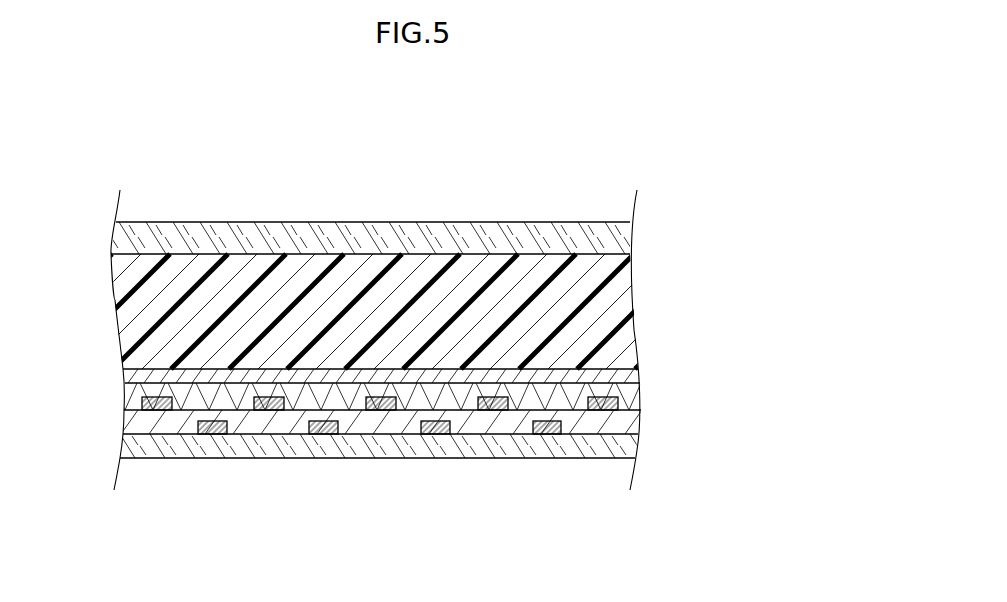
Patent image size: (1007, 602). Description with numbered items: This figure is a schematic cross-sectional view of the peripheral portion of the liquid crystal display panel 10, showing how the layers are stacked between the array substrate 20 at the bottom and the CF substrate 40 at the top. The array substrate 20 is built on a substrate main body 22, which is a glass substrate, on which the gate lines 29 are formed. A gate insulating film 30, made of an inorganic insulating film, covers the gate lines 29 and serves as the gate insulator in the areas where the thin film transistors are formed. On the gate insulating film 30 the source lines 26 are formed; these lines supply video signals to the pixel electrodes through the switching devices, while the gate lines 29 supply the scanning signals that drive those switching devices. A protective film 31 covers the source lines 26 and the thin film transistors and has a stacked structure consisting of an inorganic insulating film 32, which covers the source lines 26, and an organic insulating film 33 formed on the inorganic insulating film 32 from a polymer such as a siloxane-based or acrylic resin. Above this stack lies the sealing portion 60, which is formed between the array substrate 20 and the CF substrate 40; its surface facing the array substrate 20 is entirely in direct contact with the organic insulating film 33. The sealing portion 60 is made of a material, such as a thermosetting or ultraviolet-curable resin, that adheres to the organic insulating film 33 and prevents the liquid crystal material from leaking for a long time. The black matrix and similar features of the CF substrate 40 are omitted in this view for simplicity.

The liquid crystal display panel 10 is at (399, 300).
The array substrate 20 is at (380, 413).
The substrate main body 22 is at (380, 446).
The source lines 26 is at (380, 403).
The gate lines 29 is at (379, 427).
The gate insulating film 30 is at (380, 422).
The protective film 31 is at (380, 389).
The inorganic insulating film 32 is at (380, 396).
The organic insulating film 33 is at (380, 376).
The CF substrate 40 is at (380, 238).
The sealing portion 60 is at (375, 311).